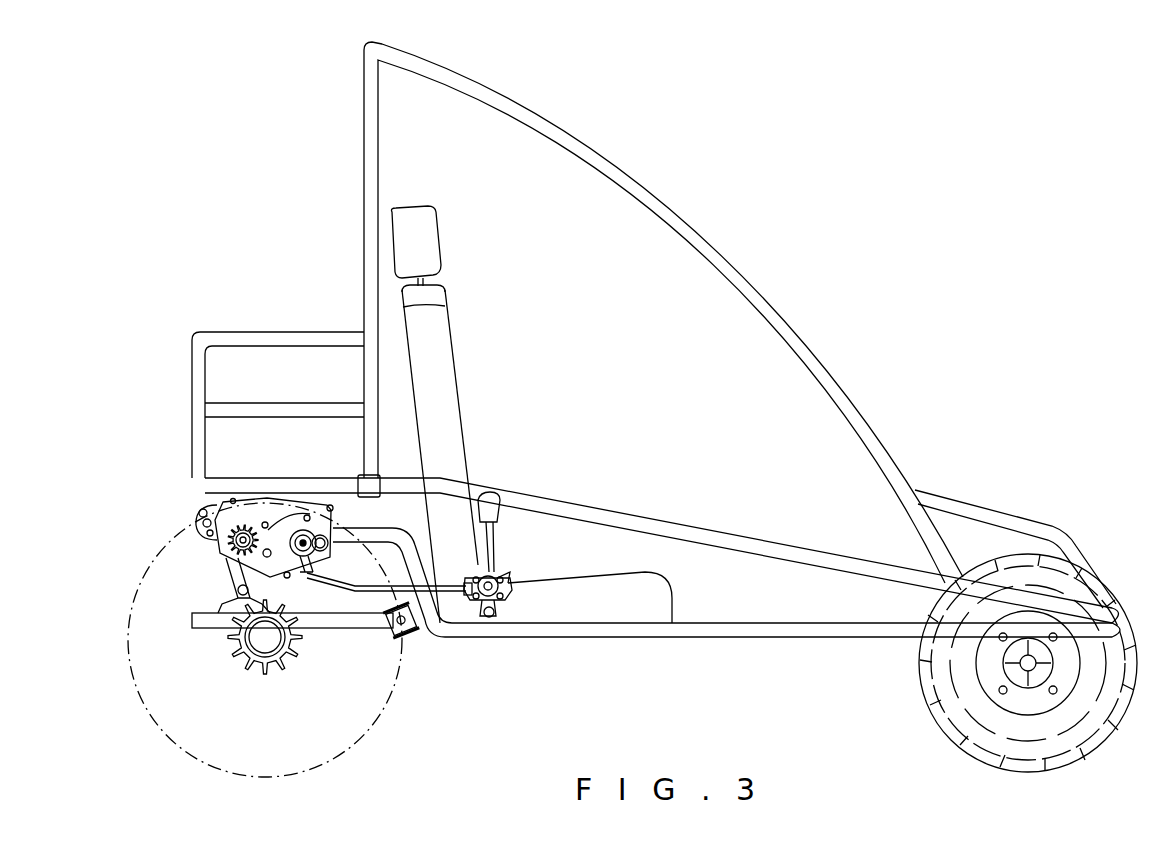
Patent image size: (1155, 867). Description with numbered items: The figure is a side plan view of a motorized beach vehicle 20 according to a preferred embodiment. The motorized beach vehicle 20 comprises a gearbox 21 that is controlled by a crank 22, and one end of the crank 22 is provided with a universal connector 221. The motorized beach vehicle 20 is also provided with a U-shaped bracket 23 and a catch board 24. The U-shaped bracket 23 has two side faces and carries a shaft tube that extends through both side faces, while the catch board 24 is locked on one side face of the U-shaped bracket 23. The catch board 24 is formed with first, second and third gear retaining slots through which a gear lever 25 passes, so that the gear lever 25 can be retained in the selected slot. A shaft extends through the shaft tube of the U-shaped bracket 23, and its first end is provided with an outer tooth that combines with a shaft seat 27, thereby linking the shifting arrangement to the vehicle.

The motorized beach vehicle 20 is at (727, 212).
The gearbox 21 is at (257, 512).
The crank 22 is at (366, 590).
The universal connector 221 is at (506, 577).
The U-shaped bracket 23 is at (485, 614).
The catch board 24 is at (474, 578).
The gear lever 25 is at (490, 497).
The shaft seat 27 is at (497, 613).